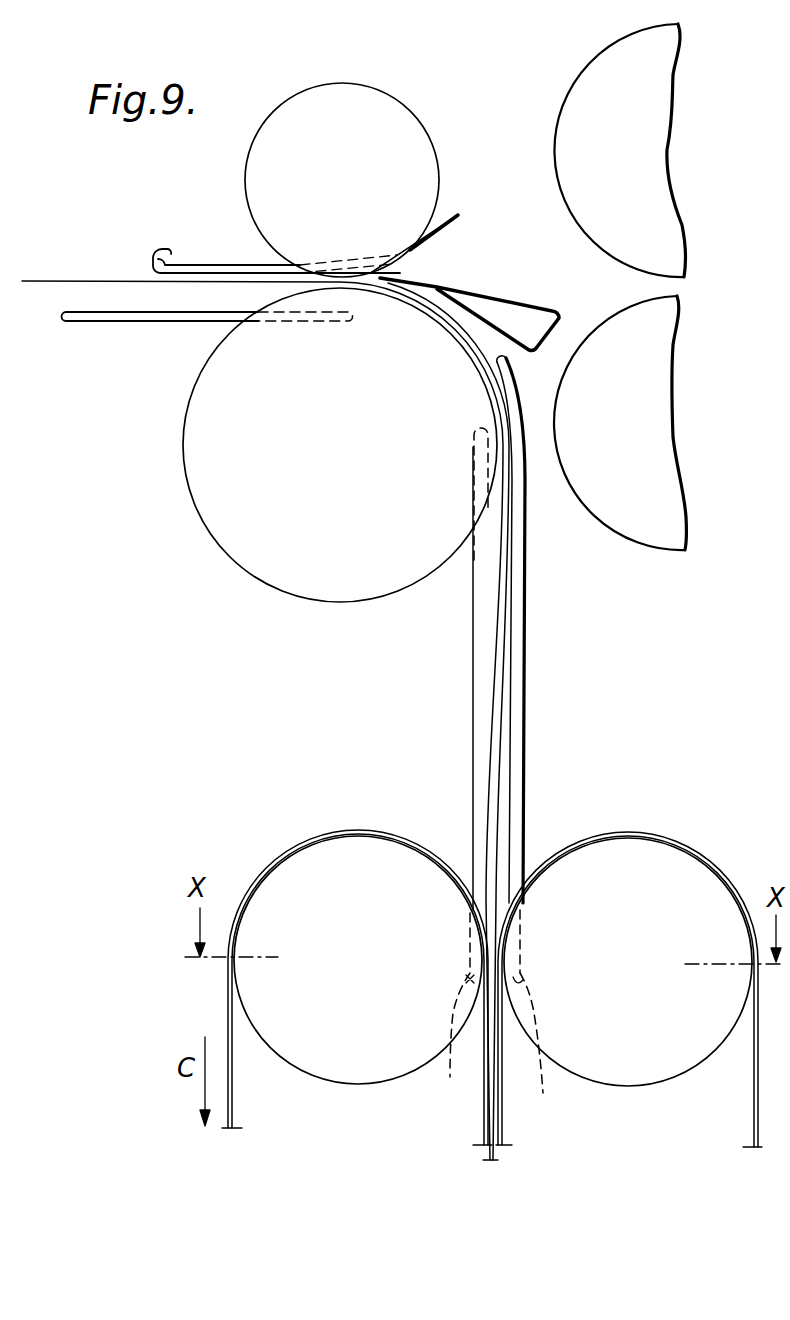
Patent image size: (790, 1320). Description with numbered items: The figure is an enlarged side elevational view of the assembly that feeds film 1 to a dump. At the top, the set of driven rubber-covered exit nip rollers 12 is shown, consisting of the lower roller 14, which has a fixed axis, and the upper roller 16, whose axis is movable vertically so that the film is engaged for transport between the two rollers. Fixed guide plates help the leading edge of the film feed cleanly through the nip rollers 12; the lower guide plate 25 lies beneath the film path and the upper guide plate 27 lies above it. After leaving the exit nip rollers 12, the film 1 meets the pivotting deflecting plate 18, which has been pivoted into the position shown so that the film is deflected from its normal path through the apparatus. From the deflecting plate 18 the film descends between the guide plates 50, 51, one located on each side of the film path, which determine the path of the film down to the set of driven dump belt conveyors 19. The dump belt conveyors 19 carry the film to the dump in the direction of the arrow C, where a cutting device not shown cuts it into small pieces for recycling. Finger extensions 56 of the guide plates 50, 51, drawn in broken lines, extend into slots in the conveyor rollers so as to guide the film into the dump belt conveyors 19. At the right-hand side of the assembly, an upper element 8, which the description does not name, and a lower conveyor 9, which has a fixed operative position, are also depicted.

The film 1 is at (497, 727).
The upper shell segment 8 is at (592, 80).
The lower conveyor 9 is at (657, 530).
The exit nip rollers 12 is at (208, 540).
The lower roller 14 is at (200, 430).
The upper roller 16 is at (393, 112).
The deflecting plate 18 is at (513, 310).
The dump belt conveyors 19 is at (230, 1001).
The lower guide plate 25 is at (156, 323).
The upper guide plate 27 is at (430, 223).
The guide plate 50 is at (523, 665).
The guide plate 51 is at (477, 659).
The finger extensions 56 is at (490, 1023).